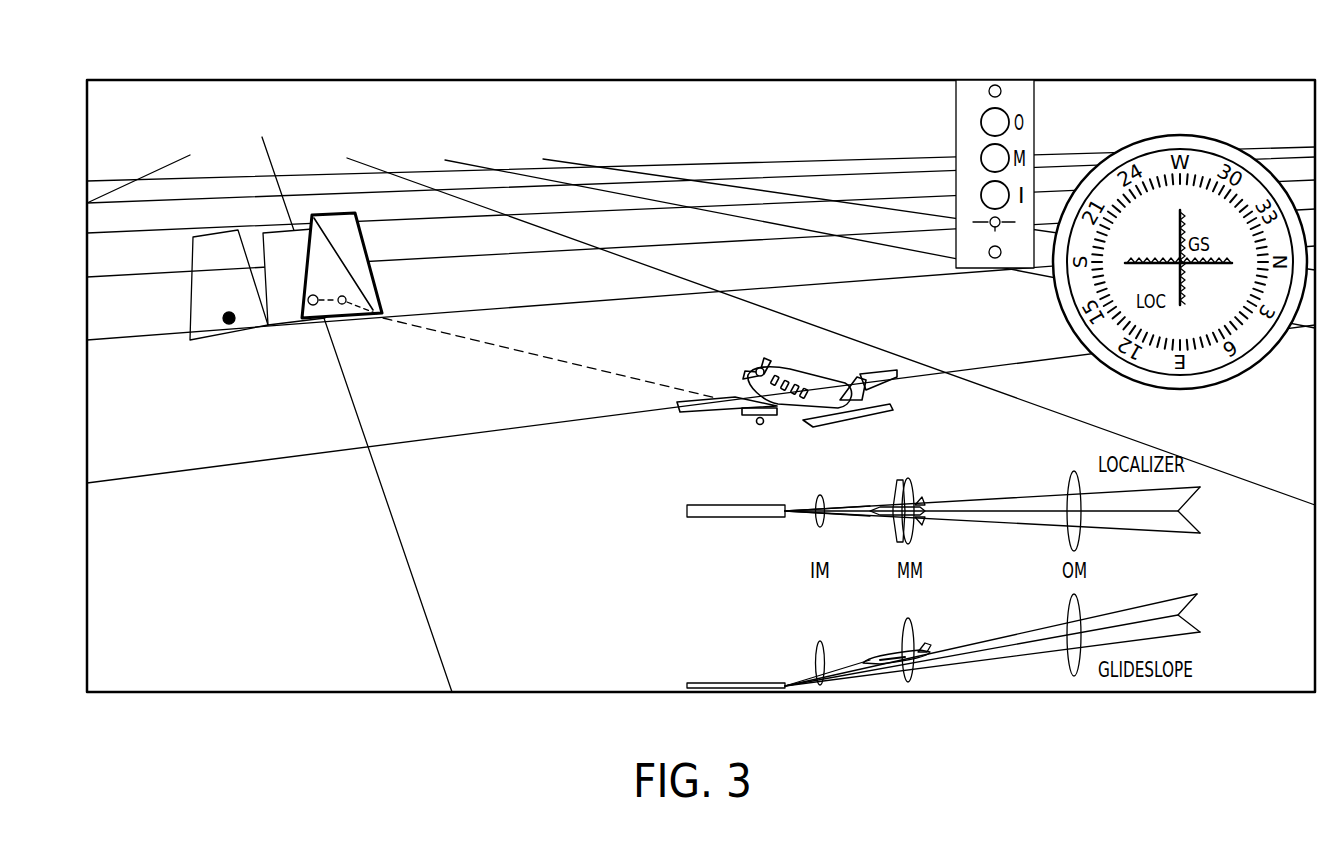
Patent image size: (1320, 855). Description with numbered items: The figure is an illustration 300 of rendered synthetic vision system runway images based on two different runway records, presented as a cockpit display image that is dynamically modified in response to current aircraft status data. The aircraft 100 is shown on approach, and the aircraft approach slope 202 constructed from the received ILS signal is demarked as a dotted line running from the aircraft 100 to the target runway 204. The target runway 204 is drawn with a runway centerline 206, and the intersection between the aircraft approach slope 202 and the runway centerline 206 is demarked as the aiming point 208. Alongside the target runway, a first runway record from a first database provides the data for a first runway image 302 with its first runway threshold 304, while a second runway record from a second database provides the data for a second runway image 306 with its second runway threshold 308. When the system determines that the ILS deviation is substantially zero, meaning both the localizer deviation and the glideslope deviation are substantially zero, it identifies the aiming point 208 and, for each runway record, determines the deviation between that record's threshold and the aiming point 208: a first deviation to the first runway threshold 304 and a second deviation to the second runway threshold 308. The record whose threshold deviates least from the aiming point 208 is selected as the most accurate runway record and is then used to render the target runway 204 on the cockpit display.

The display view of approach 300 is at (690, 80).
The aircraft 100 is at (757, 366).
The aircraft approach slope 202 is at (611, 373).
The target runway 204 is at (273, 231).
The runway centerline 206 is at (262, 137).
The aiming point 208 is at (313, 305).
The first runway image 302 is at (370, 256).
The first runway threshold 304 is at (348, 300).
The second runway image 306 is at (190, 290).
The second runway threshold 308 is at (228, 325).